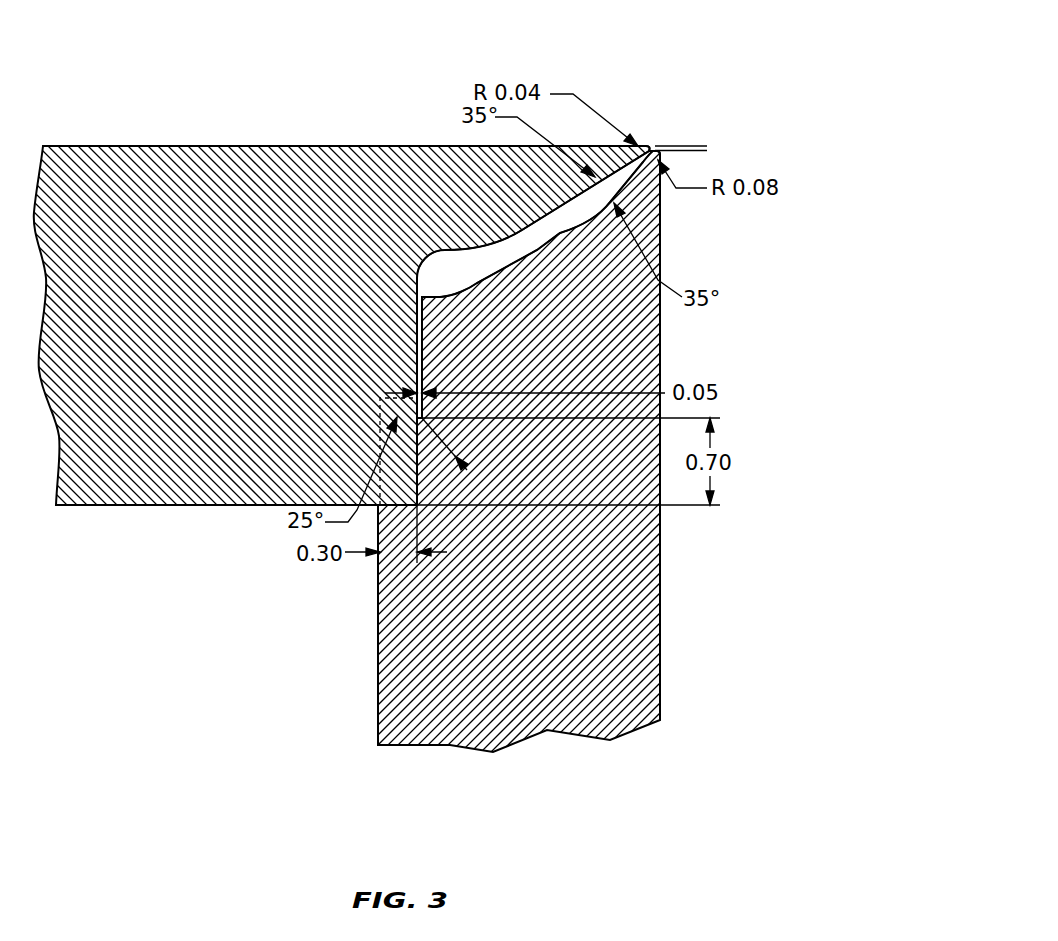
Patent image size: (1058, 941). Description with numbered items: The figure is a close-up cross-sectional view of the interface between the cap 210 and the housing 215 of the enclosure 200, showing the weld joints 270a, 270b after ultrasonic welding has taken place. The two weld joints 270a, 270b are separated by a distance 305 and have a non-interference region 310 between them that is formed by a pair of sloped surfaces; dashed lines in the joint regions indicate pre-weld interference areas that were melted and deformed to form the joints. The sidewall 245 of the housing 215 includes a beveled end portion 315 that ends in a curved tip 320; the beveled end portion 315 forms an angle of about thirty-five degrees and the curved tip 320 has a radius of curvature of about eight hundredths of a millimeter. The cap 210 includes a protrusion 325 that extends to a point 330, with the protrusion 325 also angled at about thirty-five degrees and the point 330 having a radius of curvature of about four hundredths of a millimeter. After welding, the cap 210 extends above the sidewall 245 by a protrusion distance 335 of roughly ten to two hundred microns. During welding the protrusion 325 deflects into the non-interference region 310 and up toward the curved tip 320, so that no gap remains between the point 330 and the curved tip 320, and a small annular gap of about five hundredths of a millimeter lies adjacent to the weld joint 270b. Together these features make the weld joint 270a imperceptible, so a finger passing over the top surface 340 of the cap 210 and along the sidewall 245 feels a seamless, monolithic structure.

The enclosure 200 is at (808, 50).
The cap 210 is at (258, 175).
The housing 215 is at (618, 622).
The sidewall 245 is at (627, 686).
The weld joint 270a is at (642, 143).
The weld joint 270b is at (403, 462).
The distance 305 is at (658, 162).
The non-interference region 310 is at (487, 260).
The beveled end portion 315 is at (578, 293).
The curved tip 320 is at (653, 143).
The protrusion 325 is at (520, 200).
The point 330 is at (640, 143).
The protrusion distance 335 is at (694, 152).
The top surface 340 is at (148, 146).